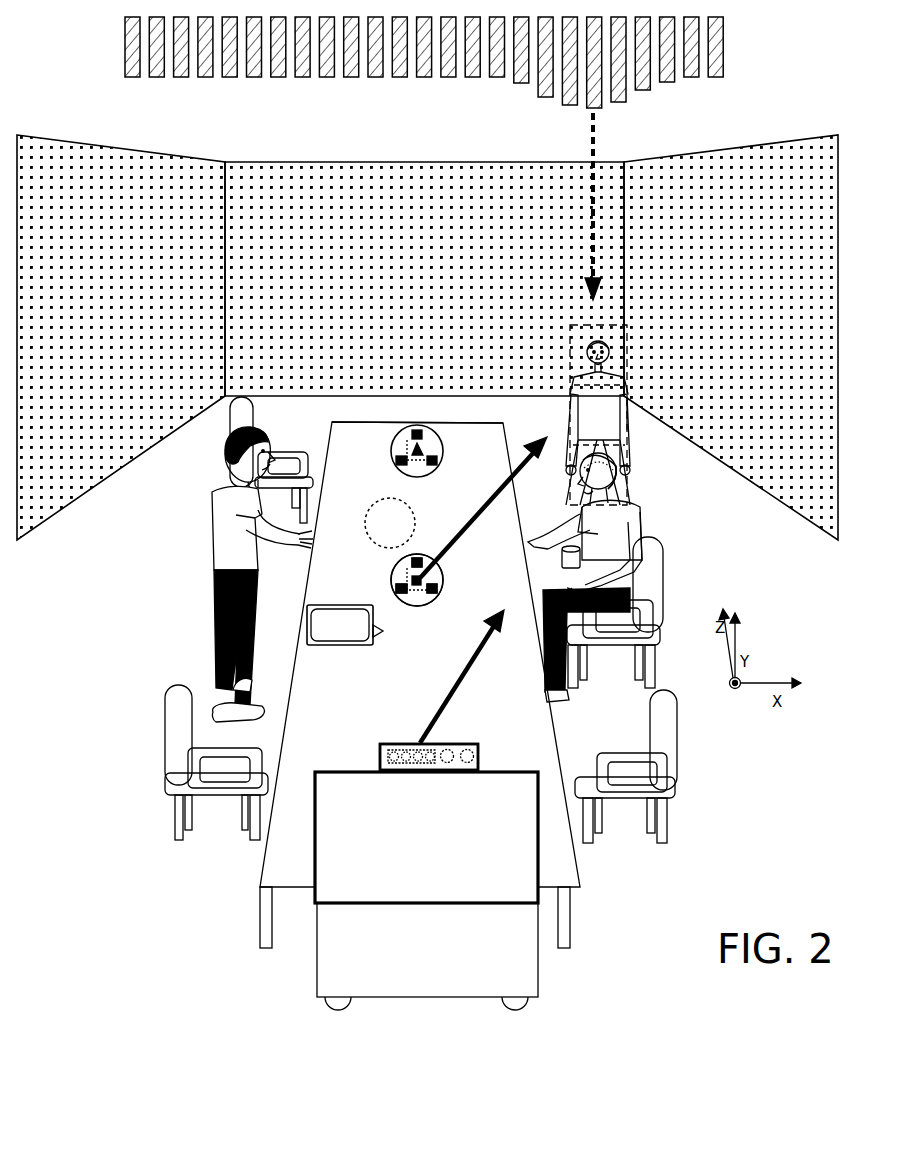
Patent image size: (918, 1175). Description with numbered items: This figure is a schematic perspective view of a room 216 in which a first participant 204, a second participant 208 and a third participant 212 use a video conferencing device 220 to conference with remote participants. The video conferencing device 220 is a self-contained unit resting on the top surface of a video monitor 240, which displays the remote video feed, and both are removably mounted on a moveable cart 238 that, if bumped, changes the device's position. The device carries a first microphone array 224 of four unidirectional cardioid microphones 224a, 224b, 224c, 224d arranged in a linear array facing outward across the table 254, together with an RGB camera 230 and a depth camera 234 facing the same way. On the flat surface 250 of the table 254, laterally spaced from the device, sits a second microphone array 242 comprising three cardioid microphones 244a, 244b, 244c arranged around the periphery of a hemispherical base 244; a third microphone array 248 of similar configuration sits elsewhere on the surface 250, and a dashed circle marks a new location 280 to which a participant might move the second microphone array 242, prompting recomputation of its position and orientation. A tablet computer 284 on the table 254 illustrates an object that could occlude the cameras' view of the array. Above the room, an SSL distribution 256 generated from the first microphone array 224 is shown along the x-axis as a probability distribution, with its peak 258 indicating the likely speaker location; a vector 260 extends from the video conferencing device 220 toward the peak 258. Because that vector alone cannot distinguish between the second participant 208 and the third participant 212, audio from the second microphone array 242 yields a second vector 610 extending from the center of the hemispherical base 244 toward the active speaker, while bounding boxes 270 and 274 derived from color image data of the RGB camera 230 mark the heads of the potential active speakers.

The first participant 204 is at (217, 492).
The second participant 208 is at (632, 520).
The third participant 212 is at (633, 425).
The room 216 is at (658, 223).
The video conferencing device 220 is at (433, 752).
The first microphone array 224 is at (424, 763).
The unidirectional microphone 224a is at (393, 766).
The unidirectional microphone 224b is at (405, 766).
The unidirectional microphone 224c is at (418, 766).
The unidirectional microphone 224d is at (467, 766).
The RGB camera 230 is at (448, 748).
The depth camera 234 is at (470, 748).
The moveable cart 238 is at (318, 960).
The video monitor 240 is at (313, 838).
The second microphone array 242 is at (406, 620).
The hemispherical base 244 is at (425, 556).
The unidirectional cardioid microphone 244a is at (396, 588).
The unidirectional cardioid microphone 244b is at (440, 590).
The unidirectional cardioid microphone 244c is at (411, 562).
The third microphone array 248 is at (376, 460).
The flat surface 250 is at (338, 434).
The table 254 is at (473, 422).
The SSL distribution 256 is at (90, 50).
The peak 258 is at (566, 130).
The vector 260 is at (478, 660).
The bounding box 270 is at (570, 362).
The bounding box 274 is at (633, 500).
The new location 280 is at (383, 500).
The tablet computer 284 is at (320, 647).
The second vector 610 is at (495, 490).